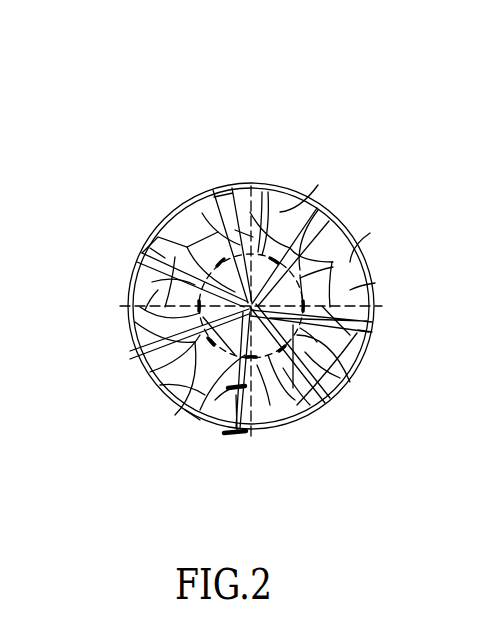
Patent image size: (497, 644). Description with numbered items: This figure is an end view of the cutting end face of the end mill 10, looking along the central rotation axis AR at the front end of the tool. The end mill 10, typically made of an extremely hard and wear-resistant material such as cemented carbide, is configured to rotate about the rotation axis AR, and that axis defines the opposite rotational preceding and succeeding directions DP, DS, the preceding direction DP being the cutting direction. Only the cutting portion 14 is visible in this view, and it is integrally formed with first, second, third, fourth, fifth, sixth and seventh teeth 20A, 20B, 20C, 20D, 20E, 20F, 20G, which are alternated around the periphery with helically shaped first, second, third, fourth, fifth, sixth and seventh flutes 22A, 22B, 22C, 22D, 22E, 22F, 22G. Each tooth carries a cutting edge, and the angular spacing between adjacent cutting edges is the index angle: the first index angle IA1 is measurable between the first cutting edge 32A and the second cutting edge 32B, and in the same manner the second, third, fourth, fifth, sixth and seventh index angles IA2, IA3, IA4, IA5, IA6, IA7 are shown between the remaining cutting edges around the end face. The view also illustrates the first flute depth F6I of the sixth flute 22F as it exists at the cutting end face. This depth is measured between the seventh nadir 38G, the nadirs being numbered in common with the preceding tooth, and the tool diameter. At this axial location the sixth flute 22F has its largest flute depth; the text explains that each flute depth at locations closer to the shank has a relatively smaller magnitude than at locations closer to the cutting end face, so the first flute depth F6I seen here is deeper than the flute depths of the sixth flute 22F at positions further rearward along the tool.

The end mill 10 is at (312, 128).
The cutting portion 14 is at (496, 106).
The first tooth 20A is at (392, 307).
The second tooth 20B is at (356, 190).
The third tooth 20C is at (207, 178).
The fourth tooth 20D is at (137, 262).
The fifth tooth 20E is at (197, 375).
The sixth tooth 20F is at (233, 448).
The seventh tooth 20G is at (338, 410).
The first flute 22A is at (350, 292).
The second flute 22B is at (320, 180).
The third flute 22C is at (196, 222).
The fourth flute 22D is at (135, 313).
The fifth flute 22E is at (160, 372).
The sixth flute 22F is at (275, 424).
The seventh flute 22G is at (345, 363).
The first cutting edge 32A is at (376, 301).
The second cutting edge 32B is at (325, 188).
The first index angle IA1 is at (348, 258).
The second index angle IA2 is at (253, 186).
The third index angle IA3 is at (145, 258).
The fourth index angle IA4 is at (165, 360).
The fifth index angle IA5 is at (207, 390).
The sixth index angle IA6 is at (334, 402).
The seventh index angle IA7 is at (355, 336).
The seventh nadir 38G is at (230, 403).
The first flute depth F6I is at (207, 423).
The succeeding direction DS is at (246, 92).
The preceding direction DP is at (142, 116).
The rotation axis AR is at (302, 425).